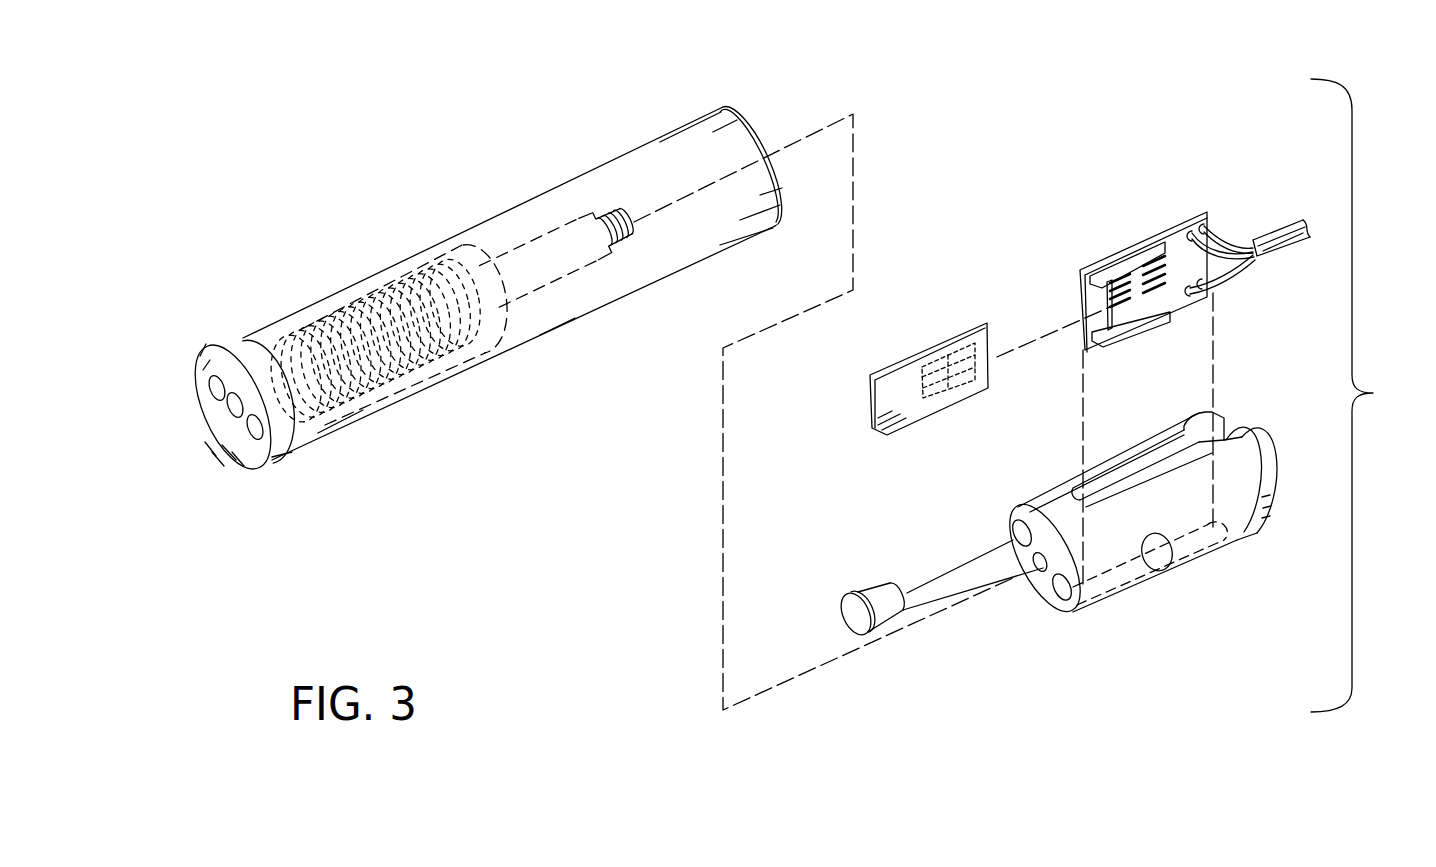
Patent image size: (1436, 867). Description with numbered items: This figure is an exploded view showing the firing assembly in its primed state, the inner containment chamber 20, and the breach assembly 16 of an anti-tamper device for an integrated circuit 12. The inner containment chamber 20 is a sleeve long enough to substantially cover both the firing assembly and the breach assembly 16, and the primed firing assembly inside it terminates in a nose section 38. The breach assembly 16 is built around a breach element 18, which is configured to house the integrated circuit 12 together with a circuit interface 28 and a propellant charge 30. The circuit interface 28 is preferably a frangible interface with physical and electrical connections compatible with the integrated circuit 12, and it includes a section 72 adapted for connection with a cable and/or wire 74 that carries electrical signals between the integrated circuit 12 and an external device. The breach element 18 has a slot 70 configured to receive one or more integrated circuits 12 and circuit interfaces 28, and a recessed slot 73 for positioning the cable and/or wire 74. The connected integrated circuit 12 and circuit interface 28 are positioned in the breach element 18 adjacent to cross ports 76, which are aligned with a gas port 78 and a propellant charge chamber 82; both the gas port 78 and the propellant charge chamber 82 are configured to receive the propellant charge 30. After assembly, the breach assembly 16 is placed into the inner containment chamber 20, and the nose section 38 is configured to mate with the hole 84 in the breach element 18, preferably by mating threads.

The inner containment chamber 20 is at (661, 128).
The nose section 38 is at (618, 217).
The integrated circuit 12 is at (907, 357).
The circuit interface 28 is at (1162, 228).
The section adapted for connection with a cable and/or wire 72 is at (1213, 225).
The cable and/or wire 74 is at (1283, 252).
The breach assembly 16 is at (1373, 393).
The breach element 18 is at (1210, 556).
The slot 70 is at (1150, 440).
The recessed slot 73 is at (1232, 428).
The cross ports 76 is at (1155, 558).
The propellant charge chamber 82 is at (1018, 530).
The hole 84 is at (1043, 570).
The gas port 78 is at (1063, 590).
The propellant charge 30 is at (872, 587).